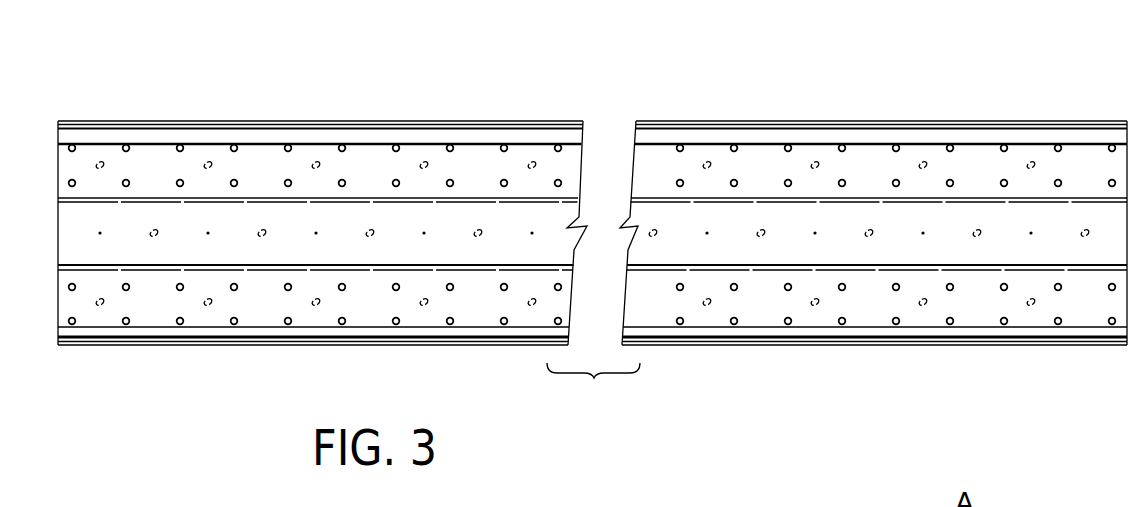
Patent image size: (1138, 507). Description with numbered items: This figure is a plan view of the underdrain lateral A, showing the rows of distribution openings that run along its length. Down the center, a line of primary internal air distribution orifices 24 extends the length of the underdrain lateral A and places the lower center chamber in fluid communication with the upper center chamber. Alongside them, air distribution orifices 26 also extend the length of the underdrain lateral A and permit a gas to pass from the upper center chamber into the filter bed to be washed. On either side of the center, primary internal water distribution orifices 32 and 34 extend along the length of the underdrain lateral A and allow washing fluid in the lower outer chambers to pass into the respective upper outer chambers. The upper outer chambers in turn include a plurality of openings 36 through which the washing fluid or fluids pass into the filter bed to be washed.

The primary internal air distribution orifices 24 is at (370, 230).
The air distribution orifices 26 is at (424, 232).
The primary internal water distribution orifice 32 is at (207, 162).
The primary internal water distribution orifice 34 is at (100, 305).
The openings 36 is at (180, 146).
The underdrain lateral A is at (930, 96).